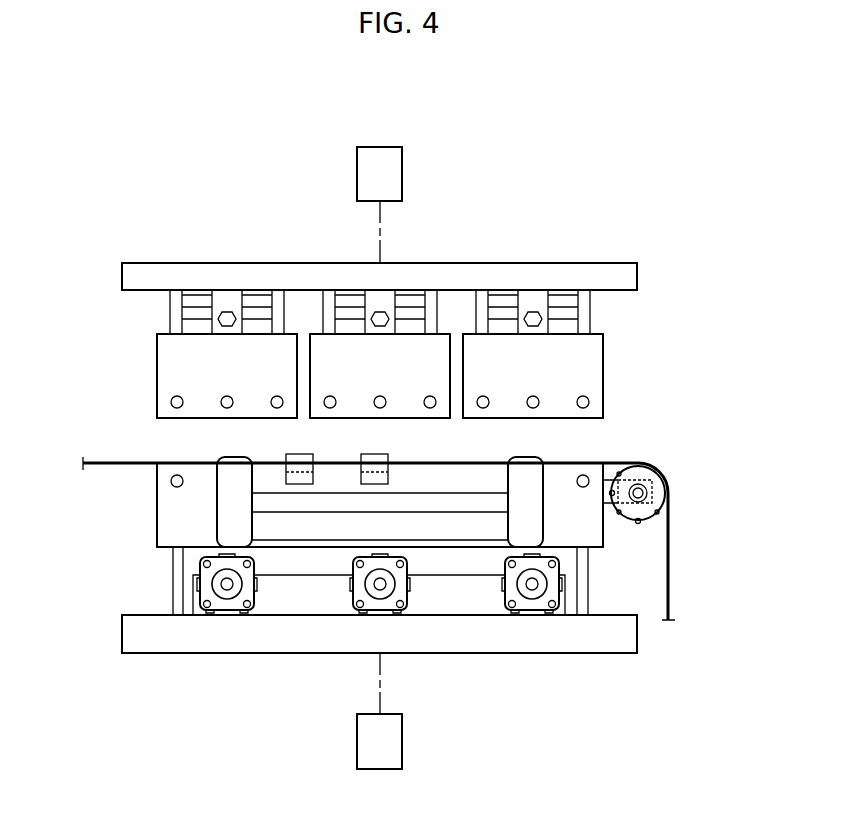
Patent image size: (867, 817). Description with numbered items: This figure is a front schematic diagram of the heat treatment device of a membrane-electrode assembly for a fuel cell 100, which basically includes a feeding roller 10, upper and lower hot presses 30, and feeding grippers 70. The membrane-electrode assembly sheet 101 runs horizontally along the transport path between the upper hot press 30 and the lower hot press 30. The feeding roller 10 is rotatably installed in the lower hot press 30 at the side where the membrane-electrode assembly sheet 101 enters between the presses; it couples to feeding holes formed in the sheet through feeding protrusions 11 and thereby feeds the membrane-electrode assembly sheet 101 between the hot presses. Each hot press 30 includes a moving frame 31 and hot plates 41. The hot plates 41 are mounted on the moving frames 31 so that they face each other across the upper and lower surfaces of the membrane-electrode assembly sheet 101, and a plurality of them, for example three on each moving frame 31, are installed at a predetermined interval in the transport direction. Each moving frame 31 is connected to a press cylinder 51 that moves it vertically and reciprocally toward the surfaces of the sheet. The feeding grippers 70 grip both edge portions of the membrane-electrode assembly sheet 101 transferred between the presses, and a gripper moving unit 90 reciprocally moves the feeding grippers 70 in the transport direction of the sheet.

The heat treatment device of a membrane-electrode assembly for a fuel cell 100 is at (337, 110).
The feeding roller 10 is at (637, 540).
The feeding protrusions 11 is at (612, 466).
The membrane-electrode assembly sheet 101 is at (670, 553).
The hot press 30 is at (120, 328).
The moving frame 31 is at (542, 275).
The hot plate 41 is at (592, 360).
The press cylinder 51 is at (403, 170).
The feeding gripper 70 is at (297, 445).
The gripper moving unit 90 is at (280, 560).